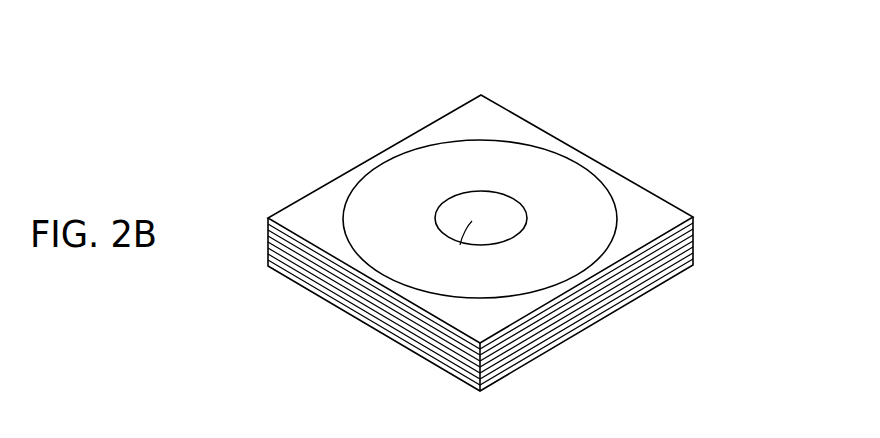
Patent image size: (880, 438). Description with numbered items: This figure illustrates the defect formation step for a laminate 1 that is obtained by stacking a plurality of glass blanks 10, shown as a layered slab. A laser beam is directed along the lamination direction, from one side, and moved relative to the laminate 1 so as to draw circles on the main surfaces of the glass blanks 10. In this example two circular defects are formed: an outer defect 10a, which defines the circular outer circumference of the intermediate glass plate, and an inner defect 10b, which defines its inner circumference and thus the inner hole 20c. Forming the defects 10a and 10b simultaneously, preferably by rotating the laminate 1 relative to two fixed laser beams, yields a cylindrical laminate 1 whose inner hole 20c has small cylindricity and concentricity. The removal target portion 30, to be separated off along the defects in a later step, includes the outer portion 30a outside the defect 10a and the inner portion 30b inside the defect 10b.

The laminate 1 is at (593, 70).
The glass blank 10 is at (642, 212).
The defect 10a is at (396, 156).
The defect 10b is at (453, 192).
The inner hole 20c is at (479, 220).
The removal target portion 30 is at (566, 103).
The outer portion 30a is at (483, 120).
The inner portion 30b is at (513, 212).